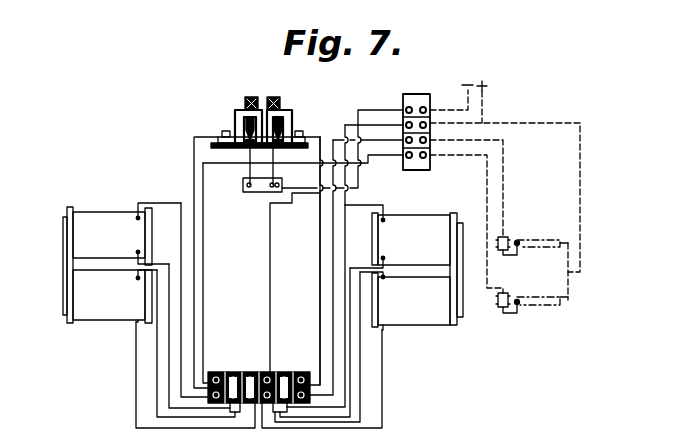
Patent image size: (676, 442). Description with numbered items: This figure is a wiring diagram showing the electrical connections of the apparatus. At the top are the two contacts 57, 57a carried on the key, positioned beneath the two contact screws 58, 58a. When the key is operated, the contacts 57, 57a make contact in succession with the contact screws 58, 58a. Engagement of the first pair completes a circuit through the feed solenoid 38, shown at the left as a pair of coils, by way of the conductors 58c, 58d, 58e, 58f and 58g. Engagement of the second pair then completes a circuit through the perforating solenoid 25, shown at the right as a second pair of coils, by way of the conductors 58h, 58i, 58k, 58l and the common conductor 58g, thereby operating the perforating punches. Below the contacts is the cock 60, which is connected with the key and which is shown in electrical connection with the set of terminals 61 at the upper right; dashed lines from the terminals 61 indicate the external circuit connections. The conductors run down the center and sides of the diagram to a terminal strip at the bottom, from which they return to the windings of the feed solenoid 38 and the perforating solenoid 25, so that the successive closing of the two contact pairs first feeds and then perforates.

The perforating solenoid 25 is at (423, 310).
The feed solenoid 38 is at (78, 276).
The contact 57 is at (196, 136).
The contact 57a is at (285, 137).
The contact screw 58 is at (250, 97).
The contact screw 58a is at (277, 97).
The conductor 58c is at (194, 298).
The conductor 58d is at (170, 323).
The conductor 58e is at (159, 347).
The conductor 58f is at (138, 372).
The conductor 58g is at (270, 252).
The conductor 58h is at (323, 130).
The conductor 58i is at (345, 347).
The conductor 58k is at (350, 372).
The conductor 58l is at (360, 402).
The cock 60 is at (262, 190).
The set of terminals 61 is at (415, 170).